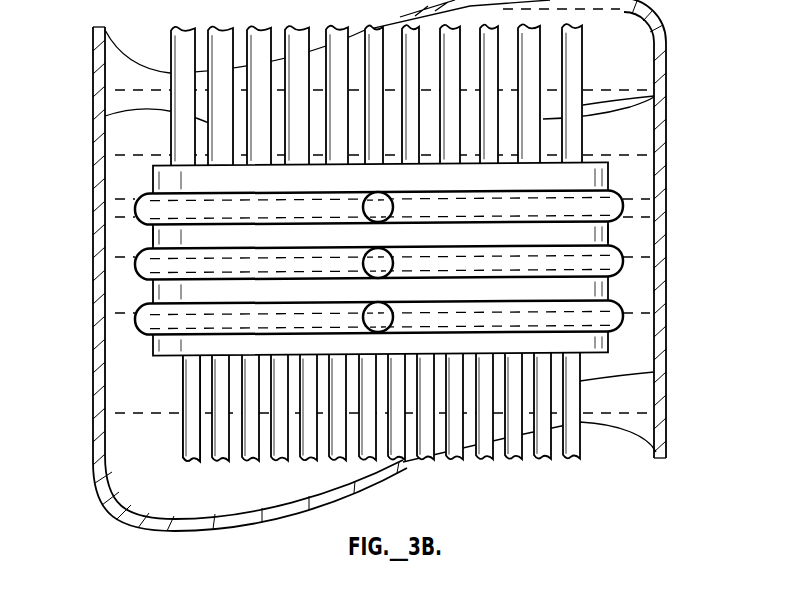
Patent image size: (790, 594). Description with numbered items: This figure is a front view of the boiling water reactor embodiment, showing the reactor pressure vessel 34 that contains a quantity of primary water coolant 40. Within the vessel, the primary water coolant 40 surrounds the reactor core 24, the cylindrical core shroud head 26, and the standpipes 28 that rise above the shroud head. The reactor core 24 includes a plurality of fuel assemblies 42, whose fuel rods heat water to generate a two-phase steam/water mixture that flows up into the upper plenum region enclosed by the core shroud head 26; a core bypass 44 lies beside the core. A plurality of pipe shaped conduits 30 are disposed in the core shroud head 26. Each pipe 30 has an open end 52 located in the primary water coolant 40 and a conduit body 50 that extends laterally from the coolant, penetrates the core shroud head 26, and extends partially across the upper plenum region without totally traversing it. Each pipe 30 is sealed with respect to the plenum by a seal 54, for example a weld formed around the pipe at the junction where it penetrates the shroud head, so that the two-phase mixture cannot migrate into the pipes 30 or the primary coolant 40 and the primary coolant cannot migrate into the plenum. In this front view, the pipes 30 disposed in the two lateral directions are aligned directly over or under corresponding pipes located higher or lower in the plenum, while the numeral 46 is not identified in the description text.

The reactor core 24 is at (654, 374).
The core shroud head 26 is at (612, 344).
The standpipes 28 is at (185, 118).
The pipe shaped conduits 30 is at (376, 192).
The reactor pressure vessel 34 is at (660, 287).
The primary water coolant 40 is at (123, 367).
The fuel assemblies 42 is at (288, 458).
The core bypass 44 is at (184, 428).
The first heat pipe 46 is at (140, 213).
The conduit body 50 is at (140, 287).
The open end 52 is at (137, 323).
The seal 54 is at (147, 254).